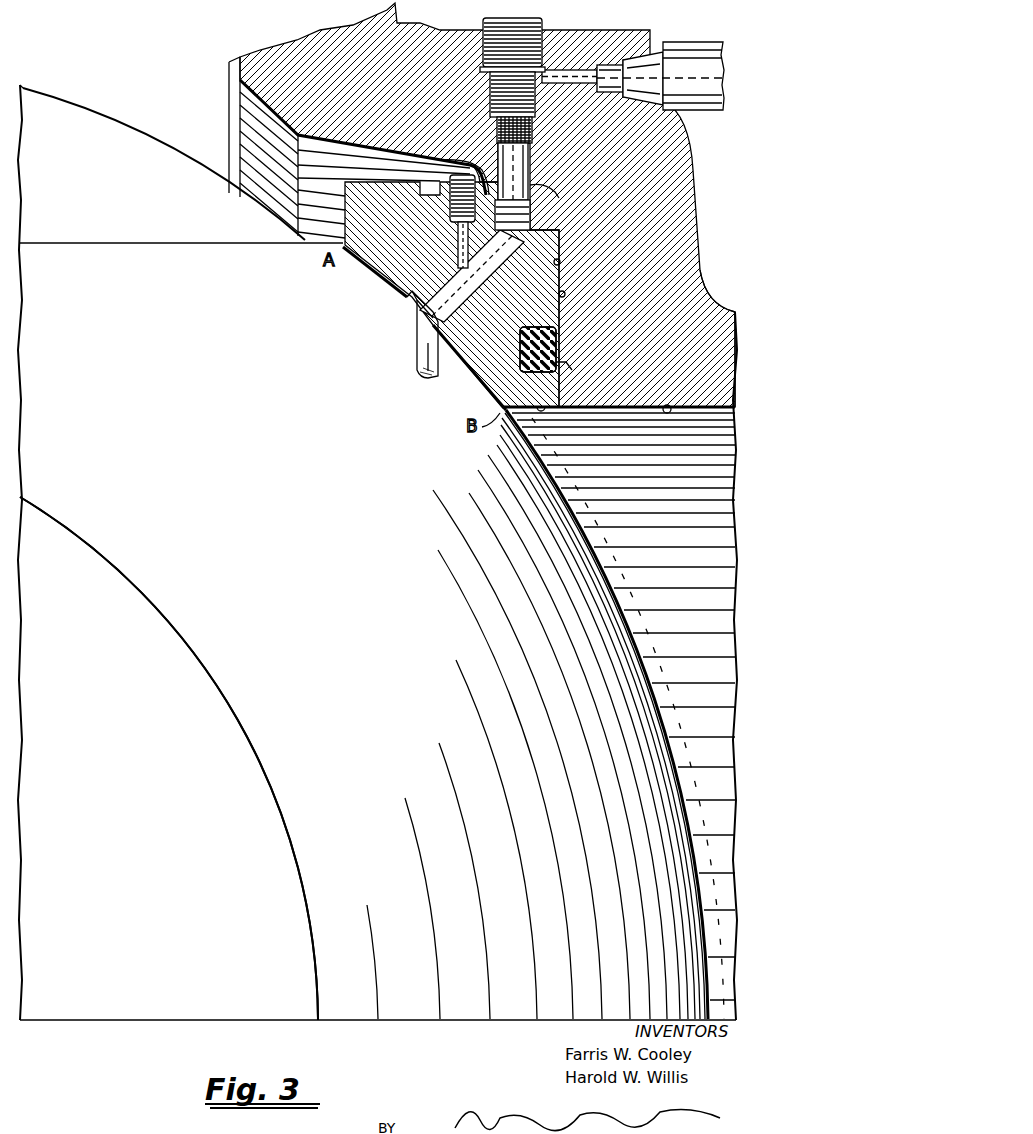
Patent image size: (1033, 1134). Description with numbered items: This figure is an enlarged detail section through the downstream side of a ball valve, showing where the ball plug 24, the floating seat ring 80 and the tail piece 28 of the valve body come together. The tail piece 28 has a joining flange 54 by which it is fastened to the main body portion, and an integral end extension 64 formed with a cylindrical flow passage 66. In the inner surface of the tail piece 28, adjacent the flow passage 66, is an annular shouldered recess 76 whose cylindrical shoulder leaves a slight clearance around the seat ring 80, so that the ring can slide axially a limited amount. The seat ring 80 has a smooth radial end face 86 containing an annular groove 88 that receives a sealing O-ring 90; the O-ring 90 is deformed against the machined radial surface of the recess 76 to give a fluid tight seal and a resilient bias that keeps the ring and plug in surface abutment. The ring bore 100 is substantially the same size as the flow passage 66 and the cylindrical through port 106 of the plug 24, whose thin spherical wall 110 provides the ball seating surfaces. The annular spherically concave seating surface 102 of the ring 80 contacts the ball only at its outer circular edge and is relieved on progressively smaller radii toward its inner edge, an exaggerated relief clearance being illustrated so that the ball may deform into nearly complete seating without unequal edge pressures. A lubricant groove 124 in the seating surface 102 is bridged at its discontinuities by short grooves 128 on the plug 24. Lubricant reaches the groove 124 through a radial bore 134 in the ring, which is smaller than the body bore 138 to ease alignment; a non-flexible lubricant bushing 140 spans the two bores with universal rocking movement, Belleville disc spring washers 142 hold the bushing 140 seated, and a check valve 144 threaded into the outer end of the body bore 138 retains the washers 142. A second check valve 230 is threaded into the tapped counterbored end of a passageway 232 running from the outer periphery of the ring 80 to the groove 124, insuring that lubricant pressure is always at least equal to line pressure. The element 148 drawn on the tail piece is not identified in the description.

The ball plug 24 is at (232, 680).
The tail piece 28 is at (677, 166).
The joining flange 54 is at (298, 55).
The end extension 64 is at (717, 312).
The flow passage 66 is at (668, 405).
The annular shouldered recess 76 is at (561, 262).
The seat ring 80 is at (398, 260).
The end face 86 is at (558, 294).
The annular groove 88 is at (534, 328).
The sealing O-ring 90 is at (575, 373).
The bore 100 is at (536, 394).
The spherically concave seating surface 102 is at (463, 370).
The through port 106 is at (285, 828).
The spherical wall 110 is at (118, 268).
The lubricant groove 124 is at (408, 310).
The short grooves 128 is at (417, 355).
The radial bore 134 is at (553, 185).
The body bore 138 is at (530, 160).
The lubricant bushing 140 is at (487, 165).
The disc spring washers 142 is at (532, 128).
The check valve 144 is at (537, 100).
The fitting 148 is at (705, 52).
The check valve 230 is at (452, 185).
The passageway 232 is at (458, 244).